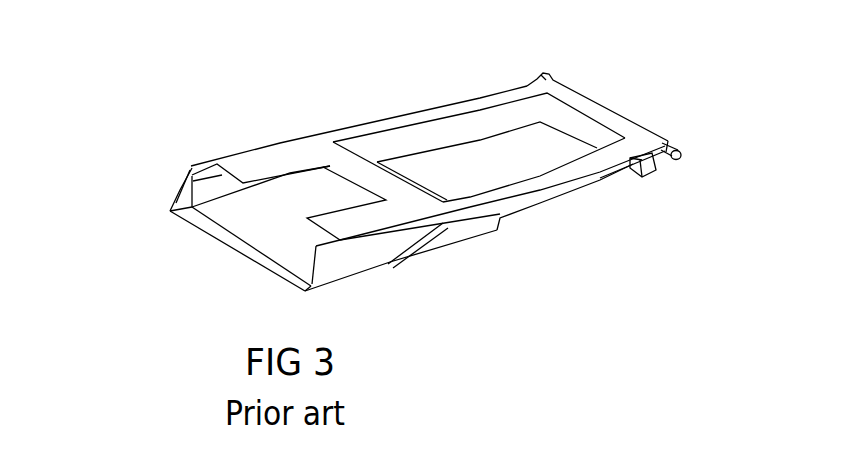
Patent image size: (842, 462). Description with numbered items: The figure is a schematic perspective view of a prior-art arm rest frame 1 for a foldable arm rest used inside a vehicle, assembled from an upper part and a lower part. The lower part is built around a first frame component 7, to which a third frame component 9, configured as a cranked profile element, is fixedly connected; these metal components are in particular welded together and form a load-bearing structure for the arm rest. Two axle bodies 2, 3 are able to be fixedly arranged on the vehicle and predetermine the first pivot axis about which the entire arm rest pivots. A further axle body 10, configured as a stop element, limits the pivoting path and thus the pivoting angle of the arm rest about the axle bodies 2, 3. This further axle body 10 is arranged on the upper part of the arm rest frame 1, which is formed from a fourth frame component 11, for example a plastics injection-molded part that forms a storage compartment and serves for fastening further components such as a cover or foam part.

The arm rest frame 1 is at (157, 162).
The axle body 2 is at (527, 86).
The axle body 3 is at (655, 178).
The first frame component 7 is at (241, 222).
The third frame component 9 is at (602, 184).
The further axle body 10 is at (681, 150).
The fourth frame component 11 is at (277, 165).